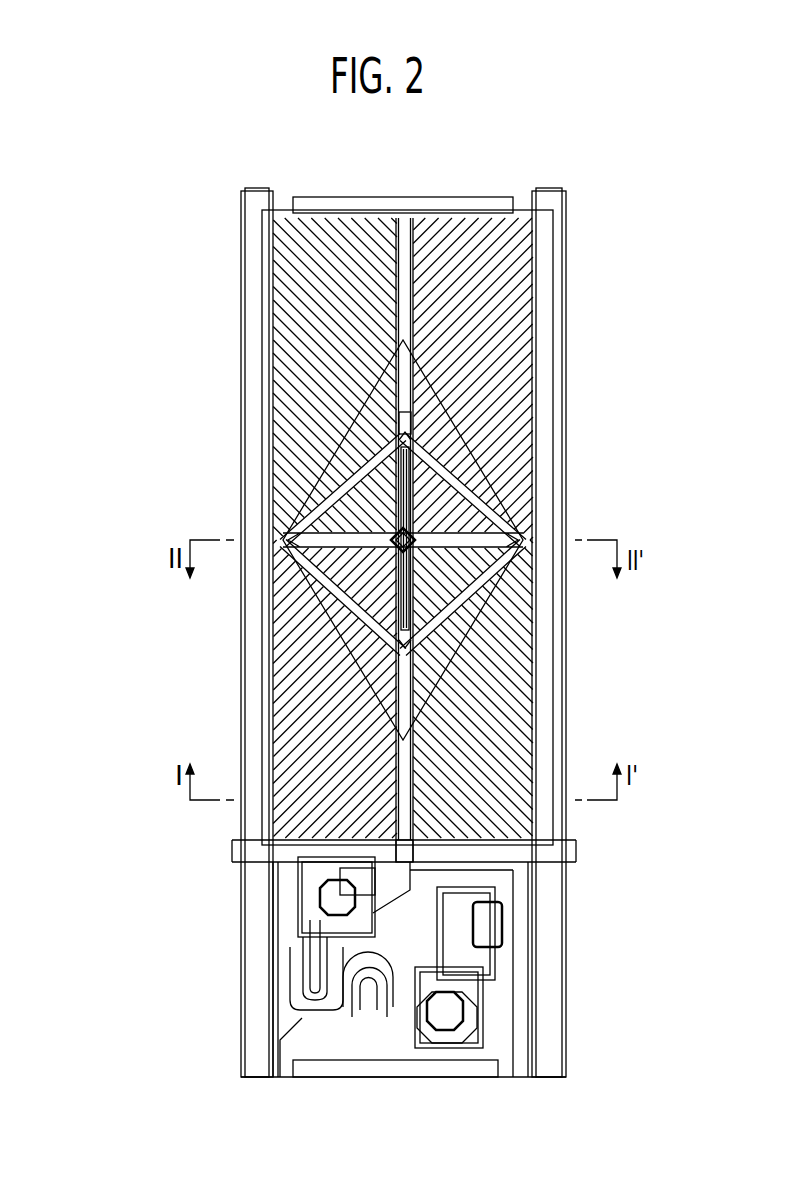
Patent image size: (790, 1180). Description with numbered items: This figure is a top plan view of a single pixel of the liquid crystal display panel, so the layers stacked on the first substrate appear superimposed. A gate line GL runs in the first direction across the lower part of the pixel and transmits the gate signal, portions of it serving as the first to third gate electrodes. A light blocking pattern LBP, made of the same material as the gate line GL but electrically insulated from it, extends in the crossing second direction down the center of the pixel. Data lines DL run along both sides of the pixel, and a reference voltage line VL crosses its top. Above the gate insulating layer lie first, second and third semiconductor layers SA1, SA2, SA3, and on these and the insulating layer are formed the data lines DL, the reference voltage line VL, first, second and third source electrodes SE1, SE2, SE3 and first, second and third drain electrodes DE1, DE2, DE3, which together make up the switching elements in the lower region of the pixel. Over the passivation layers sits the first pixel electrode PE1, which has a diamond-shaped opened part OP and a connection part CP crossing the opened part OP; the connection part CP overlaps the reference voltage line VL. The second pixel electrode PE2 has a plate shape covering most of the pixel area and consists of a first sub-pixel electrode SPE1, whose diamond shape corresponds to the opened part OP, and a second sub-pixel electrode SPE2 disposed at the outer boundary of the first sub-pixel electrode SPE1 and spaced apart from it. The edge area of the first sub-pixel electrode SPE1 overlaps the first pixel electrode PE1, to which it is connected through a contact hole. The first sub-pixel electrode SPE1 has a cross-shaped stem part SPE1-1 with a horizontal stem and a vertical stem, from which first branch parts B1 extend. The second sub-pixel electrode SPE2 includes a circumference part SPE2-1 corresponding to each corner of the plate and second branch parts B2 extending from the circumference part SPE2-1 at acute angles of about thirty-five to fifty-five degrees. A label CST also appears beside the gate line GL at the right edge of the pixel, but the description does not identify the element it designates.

The reference voltage line VL is at (404, 197).
The data line DL is at (243, 318).
The light blocking pattern LBP is at (413, 300).
The first pixel electrode PE1 is at (470, 423).
The opened part OP is at (453, 496).
The connection part CP is at (403, 505).
The second pixel electrode PE2 is at (280, 528).
The first sub-pixel electrode SPE1 is at (305, 411).
The stem part SPE1-1 is at (315, 521).
The first branch parts B1 is at (298, 556).
The second sub-pixel electrode SPE2 is at (305, 689).
The second branch parts B2 is at (298, 628).
The circumference part SPE2-1 is at (268, 665).
The storage capacitor CST is at (562, 850).
The gate line GL is at (562, 975).
The first drain electrode DE1 is at (313, 905).
The first semiconductor layer SA1 is at (308, 970).
The first source electrode SE1 is at (295, 987).
The second source electrode SE2 is at (345, 990).
The second semiconductor layer SA2 is at (357, 993).
The second drain electrode DE2 is at (368, 995).
The third drain electrode DE3 is at (433, 918).
The third semiconductor layer SA3 is at (443, 935).
The third source electrode SE3 is at (452, 957).